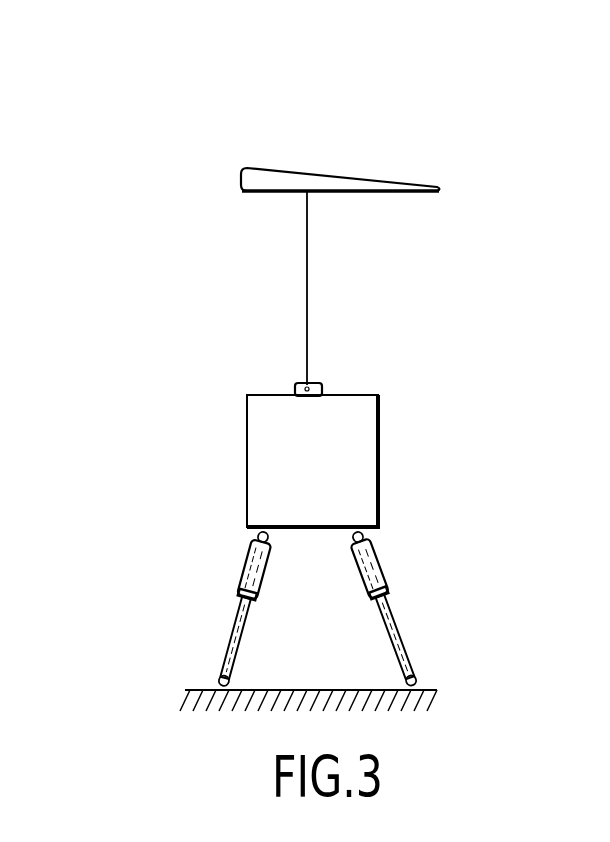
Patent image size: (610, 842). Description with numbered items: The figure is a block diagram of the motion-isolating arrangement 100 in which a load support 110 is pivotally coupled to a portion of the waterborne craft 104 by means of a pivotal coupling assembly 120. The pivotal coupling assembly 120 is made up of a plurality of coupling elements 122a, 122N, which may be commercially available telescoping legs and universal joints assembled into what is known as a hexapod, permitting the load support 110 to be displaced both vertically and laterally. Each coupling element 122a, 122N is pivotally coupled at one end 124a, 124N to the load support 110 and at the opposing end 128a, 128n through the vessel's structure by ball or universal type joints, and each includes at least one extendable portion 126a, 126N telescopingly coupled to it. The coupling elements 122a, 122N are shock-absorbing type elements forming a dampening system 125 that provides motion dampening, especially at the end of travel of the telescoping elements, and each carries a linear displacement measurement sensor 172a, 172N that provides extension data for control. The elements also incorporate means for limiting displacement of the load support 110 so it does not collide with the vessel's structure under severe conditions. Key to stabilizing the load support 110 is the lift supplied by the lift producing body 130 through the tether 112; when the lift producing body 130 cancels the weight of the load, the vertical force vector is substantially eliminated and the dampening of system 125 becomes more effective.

The load positioning system 100 is at (200, 108).
The lift producing body 130 is at (330, 173).
The tether 112 is at (307, 275).
The load support 110 is at (380, 455).
The pivotal coupling assembly 120 is at (403, 558).
The dampening system 125 is at (418, 592).
The end of coupling element 124N is at (256, 536).
The end of coupling element 124a is at (378, 529).
The coupling element 122N is at (243, 591).
The coupling element 122a is at (365, 592).
The linear displacement measurement sensor 172N is at (236, 619).
The linear displacement measurement sensor 172a is at (402, 617).
The extendable portion 126N is at (226, 665).
The extendable portion 126a is at (417, 671).
The opposing end of coupling element 128n is at (229, 683).
The opposing end of coupling element 128a is at (404, 682).
The waterborne craft 104 is at (428, 690).